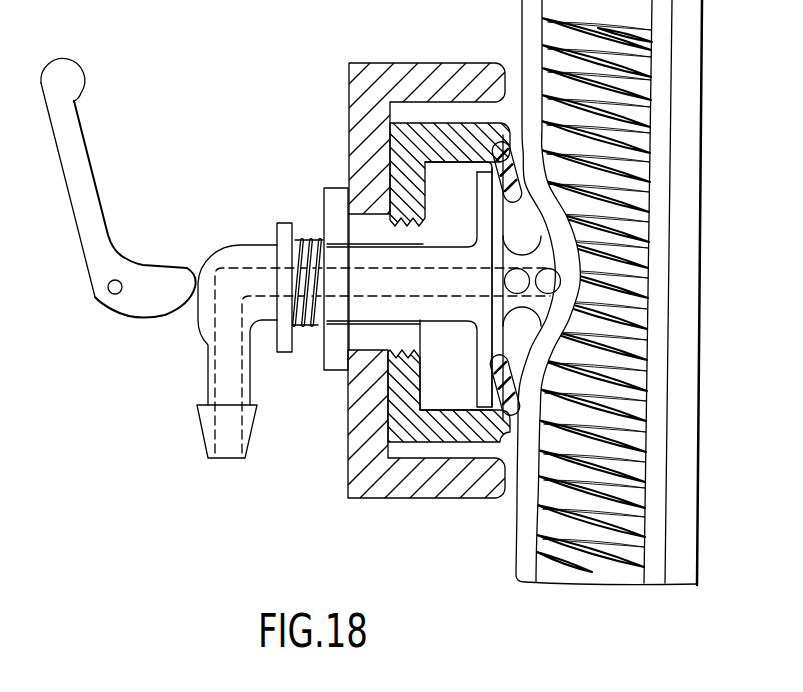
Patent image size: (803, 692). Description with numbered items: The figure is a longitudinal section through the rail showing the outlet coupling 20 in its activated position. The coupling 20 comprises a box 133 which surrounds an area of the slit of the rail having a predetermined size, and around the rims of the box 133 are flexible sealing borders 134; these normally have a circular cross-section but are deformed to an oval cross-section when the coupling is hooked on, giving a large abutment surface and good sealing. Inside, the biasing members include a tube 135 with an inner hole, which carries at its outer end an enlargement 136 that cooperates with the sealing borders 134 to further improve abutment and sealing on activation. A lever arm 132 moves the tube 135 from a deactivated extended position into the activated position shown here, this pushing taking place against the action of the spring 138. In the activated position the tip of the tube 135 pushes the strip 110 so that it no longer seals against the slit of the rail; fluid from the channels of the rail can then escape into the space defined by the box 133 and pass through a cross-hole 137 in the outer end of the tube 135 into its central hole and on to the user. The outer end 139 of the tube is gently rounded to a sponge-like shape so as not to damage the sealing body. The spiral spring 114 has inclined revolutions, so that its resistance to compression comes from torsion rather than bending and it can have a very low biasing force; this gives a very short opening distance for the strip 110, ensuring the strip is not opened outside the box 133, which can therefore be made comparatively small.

The coupling 20 is at (346, 59).
The strip 110 is at (515, 522).
The spring 114 is at (565, 562).
The lever arm 132 is at (78, 127).
The box 133 is at (348, 120).
The sealing borders 134 is at (505, 194).
The tube 135 is at (468, 247).
The enlargement 136 is at (494, 166).
The cross-hole 137 is at (500, 297).
The spring 138 is at (313, 238).
The outer end 139 is at (530, 322).